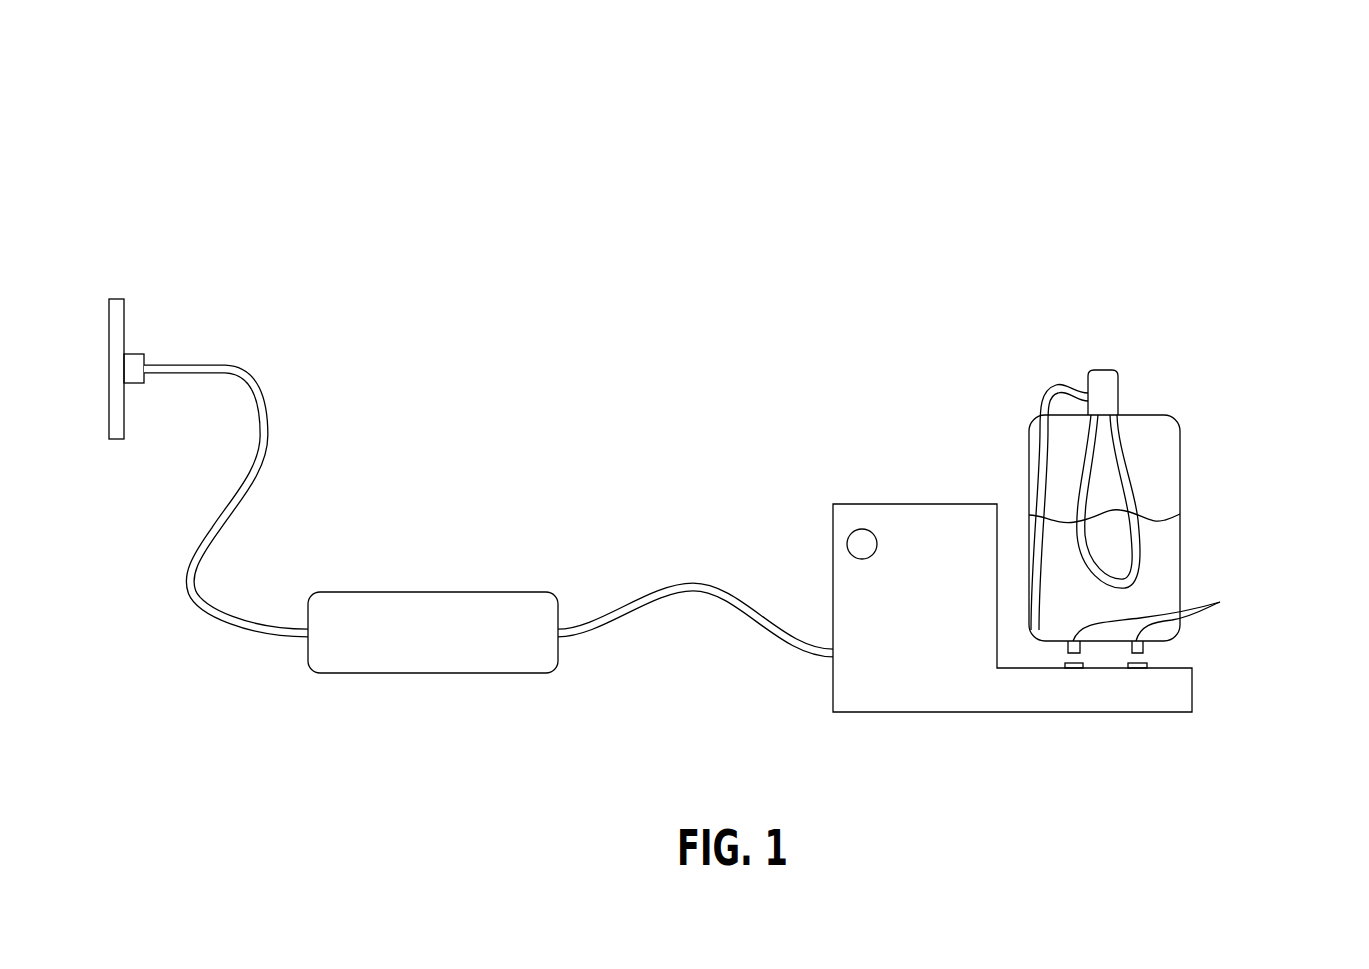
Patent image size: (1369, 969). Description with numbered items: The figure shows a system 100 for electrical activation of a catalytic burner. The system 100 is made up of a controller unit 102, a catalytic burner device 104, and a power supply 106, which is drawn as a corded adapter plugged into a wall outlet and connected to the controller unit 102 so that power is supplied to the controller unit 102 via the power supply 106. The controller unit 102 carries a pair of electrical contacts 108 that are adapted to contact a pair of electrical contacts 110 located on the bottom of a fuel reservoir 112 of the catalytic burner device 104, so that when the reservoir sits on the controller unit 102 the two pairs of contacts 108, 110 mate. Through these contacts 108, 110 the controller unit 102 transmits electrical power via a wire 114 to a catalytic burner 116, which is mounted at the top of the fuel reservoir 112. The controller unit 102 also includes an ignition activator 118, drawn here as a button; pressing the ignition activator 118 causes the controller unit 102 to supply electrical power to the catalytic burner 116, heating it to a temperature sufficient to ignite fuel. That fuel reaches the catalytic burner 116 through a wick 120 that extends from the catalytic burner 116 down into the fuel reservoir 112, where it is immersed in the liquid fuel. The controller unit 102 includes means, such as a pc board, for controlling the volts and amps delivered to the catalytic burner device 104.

The system 100 is at (467, 77).
The controller unit 102 is at (937, 712).
The catalytic burner device 104 is at (1264, 320).
The power supply 106 is at (434, 592).
The pair of electrical contacts 108 is at (1167, 658).
The pair of electrical contacts 110 is at (1154, 613).
The fuel reservoir 112 is at (1188, 515).
The wire 114 is at (1062, 387).
The catalytic burner 116 is at (1115, 370).
The ignition activator 118 is at (862, 529).
The wick 120 is at (1127, 493).